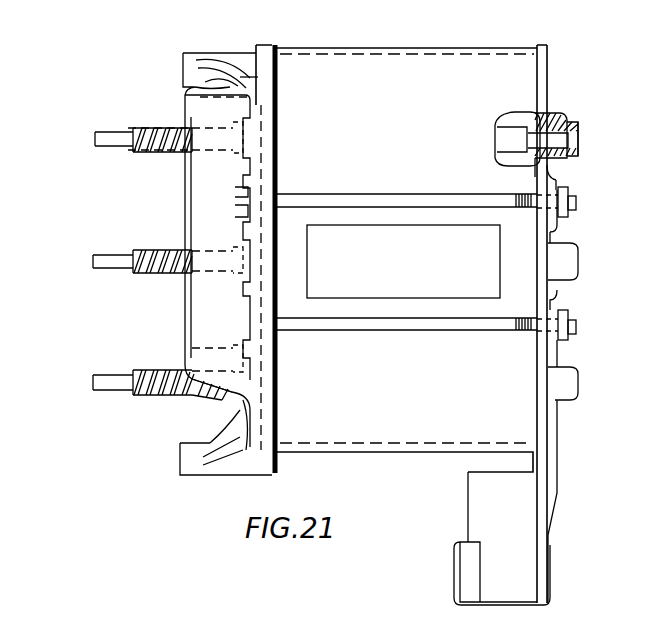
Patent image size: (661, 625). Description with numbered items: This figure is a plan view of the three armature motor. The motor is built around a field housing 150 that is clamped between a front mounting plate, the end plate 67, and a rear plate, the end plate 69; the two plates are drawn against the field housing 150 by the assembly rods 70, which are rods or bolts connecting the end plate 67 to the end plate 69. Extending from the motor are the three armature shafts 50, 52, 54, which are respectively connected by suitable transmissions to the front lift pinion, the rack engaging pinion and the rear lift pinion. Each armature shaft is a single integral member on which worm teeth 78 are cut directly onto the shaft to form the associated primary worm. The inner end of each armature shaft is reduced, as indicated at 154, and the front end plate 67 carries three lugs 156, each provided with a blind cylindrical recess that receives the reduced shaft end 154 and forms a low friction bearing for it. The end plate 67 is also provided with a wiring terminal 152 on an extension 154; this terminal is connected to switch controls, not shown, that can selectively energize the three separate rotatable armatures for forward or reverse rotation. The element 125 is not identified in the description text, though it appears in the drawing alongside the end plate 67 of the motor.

The armature shaft 50 is at (103, 137).
The armature shaft 52 is at (121, 258).
The armature shaft 54 is at (114, 377).
The end plate 67 is at (540, 168).
The end plate 69 is at (279, 133).
The assembly rods 70 is at (440, 193).
The worm teeth 78 is at (166, 155).
The mounting plate 125 is at (564, 51).
The field housing 150 is at (408, 47).
The wiring terminal 152 is at (480, 503).
The extension 154 is at (555, 137).
The lugs 156 is at (580, 130).